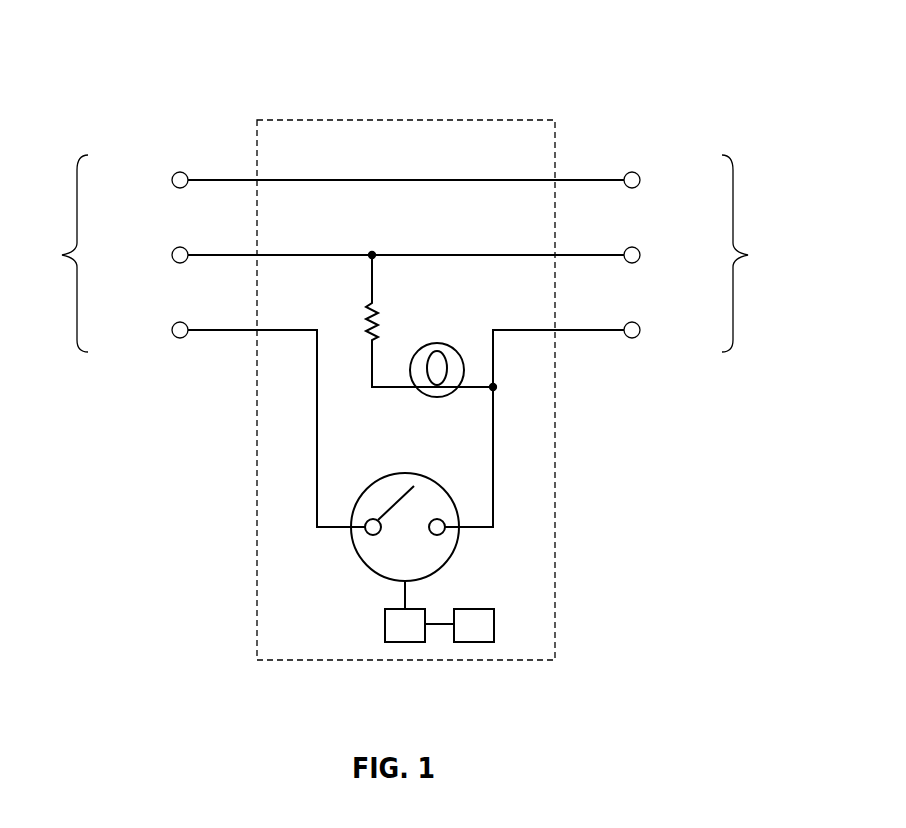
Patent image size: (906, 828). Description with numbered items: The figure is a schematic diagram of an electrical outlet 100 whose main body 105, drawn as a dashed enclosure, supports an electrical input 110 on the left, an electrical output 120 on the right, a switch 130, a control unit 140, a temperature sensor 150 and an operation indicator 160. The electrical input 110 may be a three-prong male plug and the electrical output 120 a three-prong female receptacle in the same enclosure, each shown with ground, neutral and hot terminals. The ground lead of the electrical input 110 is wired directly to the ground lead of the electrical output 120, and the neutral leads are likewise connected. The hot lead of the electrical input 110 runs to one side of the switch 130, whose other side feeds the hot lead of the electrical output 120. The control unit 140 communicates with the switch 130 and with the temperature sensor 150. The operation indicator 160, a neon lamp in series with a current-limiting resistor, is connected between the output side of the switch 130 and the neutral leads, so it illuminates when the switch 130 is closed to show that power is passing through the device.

The electrical outlet 100 is at (257, 36).
The main body 105 is at (488, 119).
The electrical input 110 is at (102, 253).
The electrical output 120 is at (710, 253).
The switch 130 is at (405, 473).
The control unit 140 is at (402, 643).
The temperature sensor 150 is at (473, 643).
The operation indicator 160 is at (437, 343).